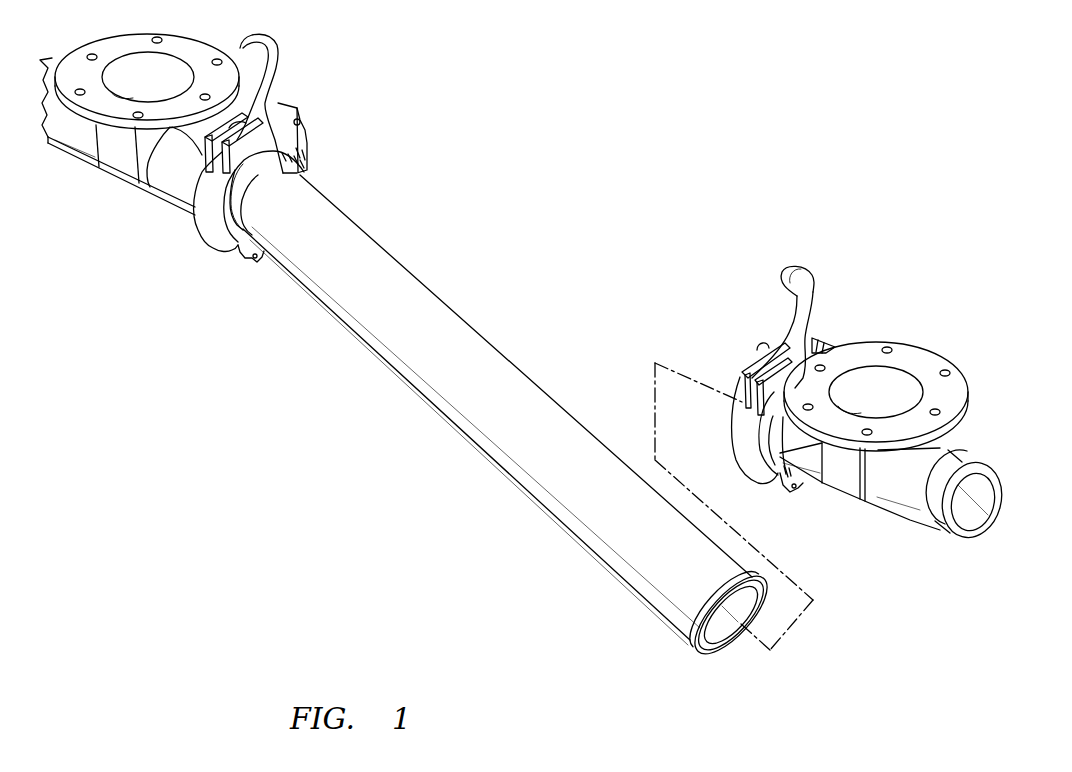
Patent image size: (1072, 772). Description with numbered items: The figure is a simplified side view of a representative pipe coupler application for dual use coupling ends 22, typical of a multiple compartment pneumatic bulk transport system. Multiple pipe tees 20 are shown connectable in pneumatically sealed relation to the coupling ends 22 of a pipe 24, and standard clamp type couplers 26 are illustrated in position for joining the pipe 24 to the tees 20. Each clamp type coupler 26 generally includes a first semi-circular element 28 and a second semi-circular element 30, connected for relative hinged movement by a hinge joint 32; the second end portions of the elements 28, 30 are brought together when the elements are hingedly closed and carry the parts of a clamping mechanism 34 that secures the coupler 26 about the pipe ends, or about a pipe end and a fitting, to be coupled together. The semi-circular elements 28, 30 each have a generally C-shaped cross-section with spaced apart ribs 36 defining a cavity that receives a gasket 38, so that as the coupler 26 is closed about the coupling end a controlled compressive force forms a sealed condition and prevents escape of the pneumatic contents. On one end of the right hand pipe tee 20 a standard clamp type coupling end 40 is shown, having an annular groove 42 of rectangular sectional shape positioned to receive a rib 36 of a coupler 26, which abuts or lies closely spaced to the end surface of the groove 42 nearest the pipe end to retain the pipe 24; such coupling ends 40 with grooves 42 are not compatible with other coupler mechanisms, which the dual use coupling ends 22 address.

The pipe tee 20 is at (128, 173).
The dual use coupling end 22 is at (275, 187).
The pipe 24 is at (454, 308).
The clamp type coupler 26 is at (313, 122).
The first semi-circular element 28 is at (196, 219).
The second semi-circular element 30 is at (293, 161).
The hinge joint 32 is at (262, 256).
The clamping mechanism 34 is at (280, 90).
The rib 36 is at (226, 243).
The gasket 38 is at (300, 158).
The standard clamp type coupling end 40 is at (1003, 474).
The annular groove 42 is at (934, 500).